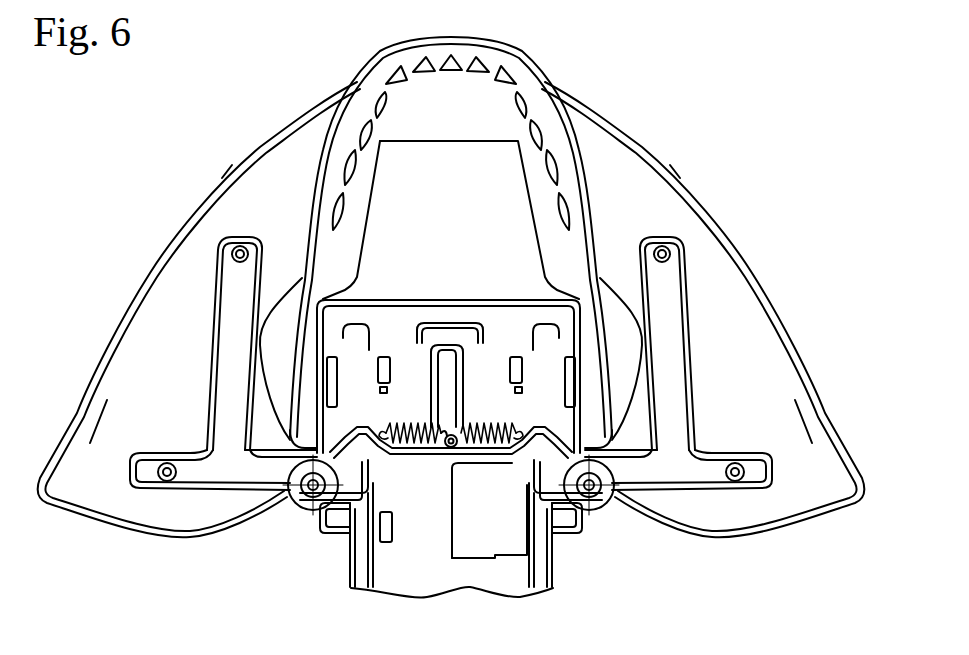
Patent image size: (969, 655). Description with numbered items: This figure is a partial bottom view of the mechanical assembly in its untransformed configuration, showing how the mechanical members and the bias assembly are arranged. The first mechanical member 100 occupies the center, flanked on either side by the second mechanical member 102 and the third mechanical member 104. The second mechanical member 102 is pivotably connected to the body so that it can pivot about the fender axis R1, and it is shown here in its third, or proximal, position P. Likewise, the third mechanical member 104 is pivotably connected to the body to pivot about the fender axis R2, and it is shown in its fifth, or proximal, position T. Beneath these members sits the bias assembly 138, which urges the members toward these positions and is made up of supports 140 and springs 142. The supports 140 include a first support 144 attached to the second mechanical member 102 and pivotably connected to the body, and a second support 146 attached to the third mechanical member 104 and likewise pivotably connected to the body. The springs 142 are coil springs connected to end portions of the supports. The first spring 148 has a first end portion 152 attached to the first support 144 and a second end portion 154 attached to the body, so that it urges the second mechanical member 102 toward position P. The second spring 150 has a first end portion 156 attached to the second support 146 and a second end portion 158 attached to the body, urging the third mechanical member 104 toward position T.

The first mechanical member 100 is at (507, 68).
The second mechanical member 102 is at (168, 296).
The third mechanical member 104 is at (757, 342).
The bias assembly 138 is at (553, 480).
The supports 140 is at (213, 480).
The springs 142 is at (472, 440).
The first support 144 is at (225, 410).
The second support 146 is at (668, 403).
The first spring 148 is at (412, 425).
The second spring 150 is at (485, 425).
The first end portion 152 is at (390, 440).
The second end portion 154 is at (437, 428).
The first end portion 156 is at (511, 440).
The second end portion 158 is at (465, 428).
The third position P is at (233, 202).
The fifth position T is at (672, 202).
The fender axis R1 is at (303, 502).
The fender axis R2 is at (600, 502).